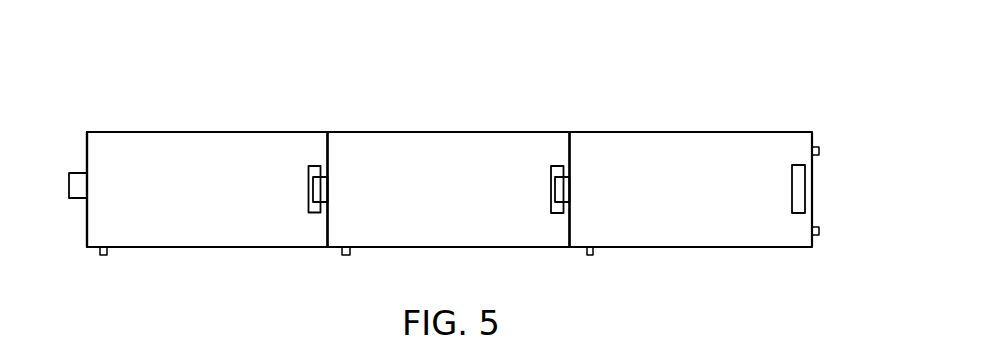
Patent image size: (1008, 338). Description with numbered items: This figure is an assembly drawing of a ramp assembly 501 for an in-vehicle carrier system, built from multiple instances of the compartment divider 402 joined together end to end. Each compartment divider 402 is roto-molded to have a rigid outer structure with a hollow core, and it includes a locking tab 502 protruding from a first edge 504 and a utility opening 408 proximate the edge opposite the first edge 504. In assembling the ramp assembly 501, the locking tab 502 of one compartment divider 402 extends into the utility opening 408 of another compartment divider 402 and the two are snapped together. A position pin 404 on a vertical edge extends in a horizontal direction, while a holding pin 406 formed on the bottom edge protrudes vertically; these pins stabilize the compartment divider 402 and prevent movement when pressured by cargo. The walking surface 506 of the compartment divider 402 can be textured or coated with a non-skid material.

The ramp assembly 501 is at (151, 28).
The first edge 504 is at (87, 132).
The locking tab 502 is at (74, 187).
The compartment divider 402 is at (154, 232).
The utility opening 408 is at (314, 166).
The walking surface 506 is at (414, 193).
The holding pin 406 is at (590, 255).
The position pin 404 is at (819, 149).